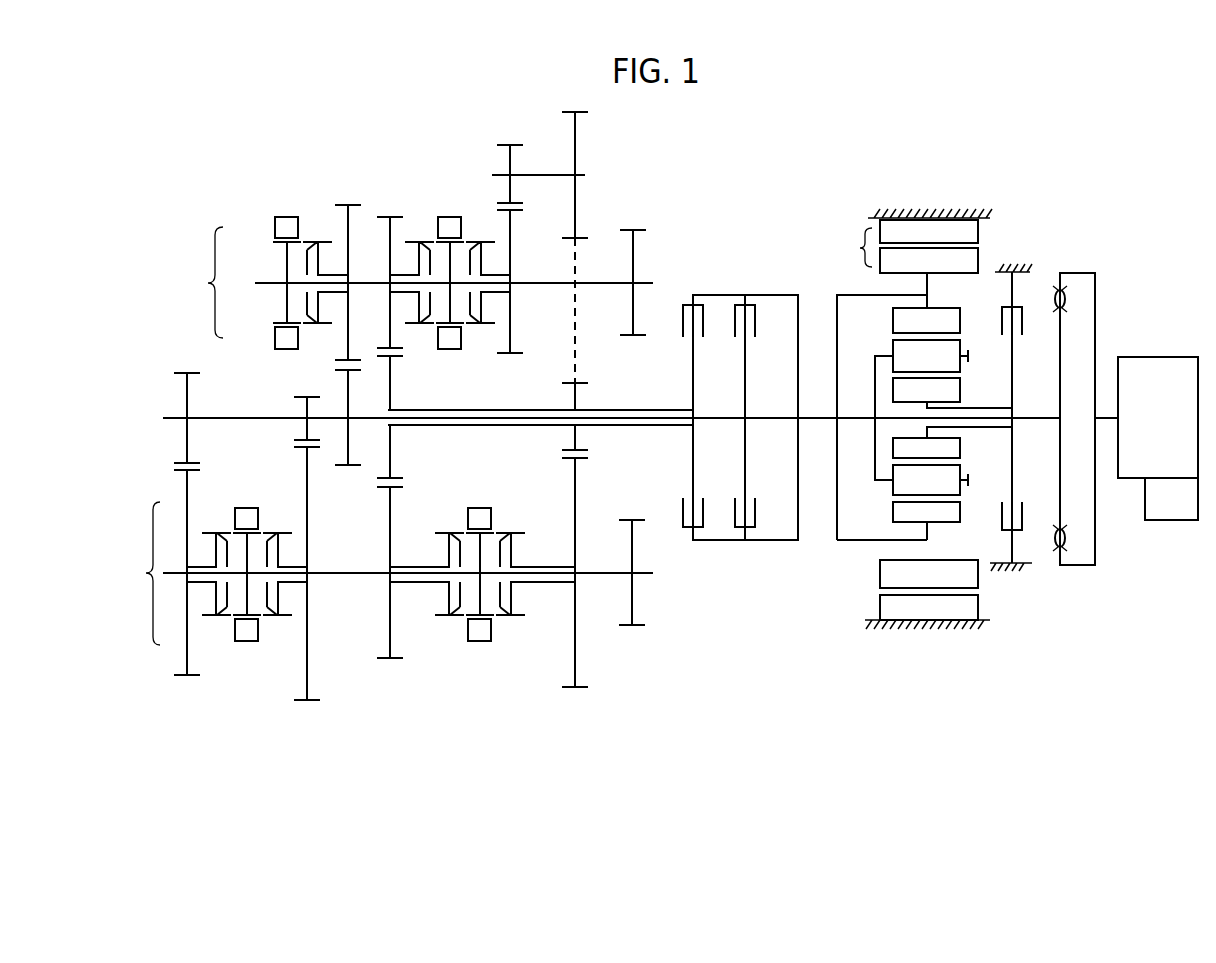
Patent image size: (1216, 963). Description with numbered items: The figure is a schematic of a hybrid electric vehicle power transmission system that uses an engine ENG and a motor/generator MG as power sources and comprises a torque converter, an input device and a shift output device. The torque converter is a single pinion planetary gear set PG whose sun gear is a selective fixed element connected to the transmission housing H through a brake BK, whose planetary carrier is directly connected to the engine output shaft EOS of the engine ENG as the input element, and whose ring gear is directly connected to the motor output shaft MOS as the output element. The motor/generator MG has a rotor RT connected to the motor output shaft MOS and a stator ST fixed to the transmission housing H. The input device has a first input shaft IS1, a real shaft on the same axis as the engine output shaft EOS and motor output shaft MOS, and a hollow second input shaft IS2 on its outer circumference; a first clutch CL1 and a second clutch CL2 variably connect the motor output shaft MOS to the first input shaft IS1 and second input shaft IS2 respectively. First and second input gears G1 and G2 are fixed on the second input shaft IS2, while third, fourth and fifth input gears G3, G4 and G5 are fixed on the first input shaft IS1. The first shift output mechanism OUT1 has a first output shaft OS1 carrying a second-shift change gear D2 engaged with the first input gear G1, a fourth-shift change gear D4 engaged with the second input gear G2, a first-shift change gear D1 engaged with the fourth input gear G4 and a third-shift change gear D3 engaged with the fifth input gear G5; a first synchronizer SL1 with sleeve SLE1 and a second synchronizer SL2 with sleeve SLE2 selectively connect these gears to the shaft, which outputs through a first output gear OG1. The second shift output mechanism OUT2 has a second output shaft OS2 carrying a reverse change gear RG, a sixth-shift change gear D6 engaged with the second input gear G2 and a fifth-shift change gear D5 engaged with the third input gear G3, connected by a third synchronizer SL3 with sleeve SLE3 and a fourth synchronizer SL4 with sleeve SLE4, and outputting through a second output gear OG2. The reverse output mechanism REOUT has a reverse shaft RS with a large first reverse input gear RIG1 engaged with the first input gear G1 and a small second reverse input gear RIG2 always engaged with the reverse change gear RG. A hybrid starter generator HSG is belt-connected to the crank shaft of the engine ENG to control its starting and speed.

The second output shaft OS2 is at (598, 282).
The second shift output mechanism OUT2 is at (196, 282).
The first output shaft OS1 is at (595, 572).
The first shift output mechanism OUT1 is at (132, 573).
The second input shaft IS2 is at (505, 427).
The first input shaft IS1 is at (455, 427).
The sleeve SLE4 is at (287, 217).
The fourth synchronizer SL4 is at (255, 208).
The fifth-shift change gear D5 is at (348, 225).
The third input gear G3 is at (348, 392).
The sixth-shift change gear D6 is at (392, 234).
The second input gear G2 is at (390, 390).
The sleeve SLE3 is at (452, 215).
The third synchronizer SL3 is at (442, 205).
The reverse change gear RG is at (512, 257).
The second reverse input gear RIG2 is at (508, 152).
The reverse shaft RS is at (535, 177).
The first reverse input gear RIG1 is at (572, 128).
The reverse output mechanism REOUT is at (590, 146).
The first input gear G1 is at (576, 392).
The second output gear OG2 is at (634, 305).
The fifth input gear G5 is at (188, 386).
The third-shift change gear D3 is at (186, 662).
The sleeve SLE2 is at (247, 641).
The second synchronizer SL2 is at (256, 682).
The fourth input gear G4 is at (306, 407).
The first-shift change gear D1 is at (308, 652).
The fourth-shift change gear D4 is at (390, 648).
The sleeve SLE1 is at (482, 640).
The first synchronizer SL1 is at (485, 696).
The second-shift change gear D2 is at (574, 661).
The first output gear OG1 is at (634, 600).
The second clutch CL2 is at (710, 318).
The first clutch CL1 is at (760, 318).
The motor output shaft MOS is at (815, 421).
The transmission housing H is at (932, 208).
The stator ST is at (929, 420).
The rotor RT is at (929, 418).
The motor/generator MG is at (875, 384).
The planetary gear set PG is at (968, 315).
The brake BK is at (1030, 312).
The engine output shaft EOS is at (1040, 421).
The engine ENG is at (1158, 417).
The hybrid starter generator HSG is at (1171, 499).